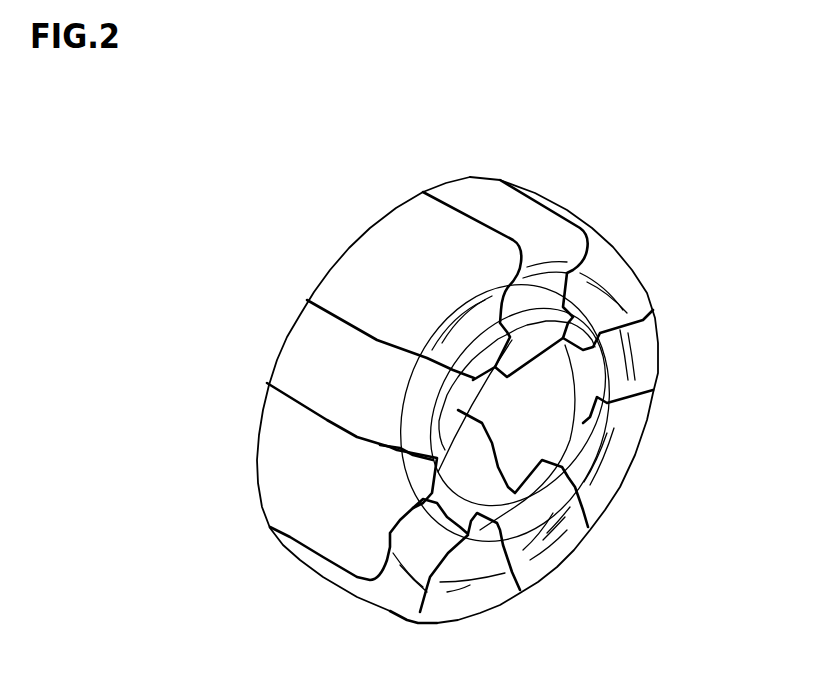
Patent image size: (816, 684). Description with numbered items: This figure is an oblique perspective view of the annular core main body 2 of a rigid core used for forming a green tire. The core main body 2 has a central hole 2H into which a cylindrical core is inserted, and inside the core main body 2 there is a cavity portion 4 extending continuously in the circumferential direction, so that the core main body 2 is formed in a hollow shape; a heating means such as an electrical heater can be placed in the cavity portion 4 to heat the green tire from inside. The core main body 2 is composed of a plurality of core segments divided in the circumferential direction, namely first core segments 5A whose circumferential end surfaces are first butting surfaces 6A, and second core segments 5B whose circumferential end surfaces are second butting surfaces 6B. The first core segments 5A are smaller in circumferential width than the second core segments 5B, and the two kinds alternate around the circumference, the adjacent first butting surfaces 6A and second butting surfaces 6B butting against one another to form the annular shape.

The core main body 2 is at (640, 157).
The central hole 2H is at (533, 493).
The cavity portion 4 is at (528, 404).
The first core segments 5A is at (488, 195).
The second core segments 5B is at (380, 273).
The first butting surfaces 6A is at (337, 307).
The second butting surfaces 6B is at (308, 359).